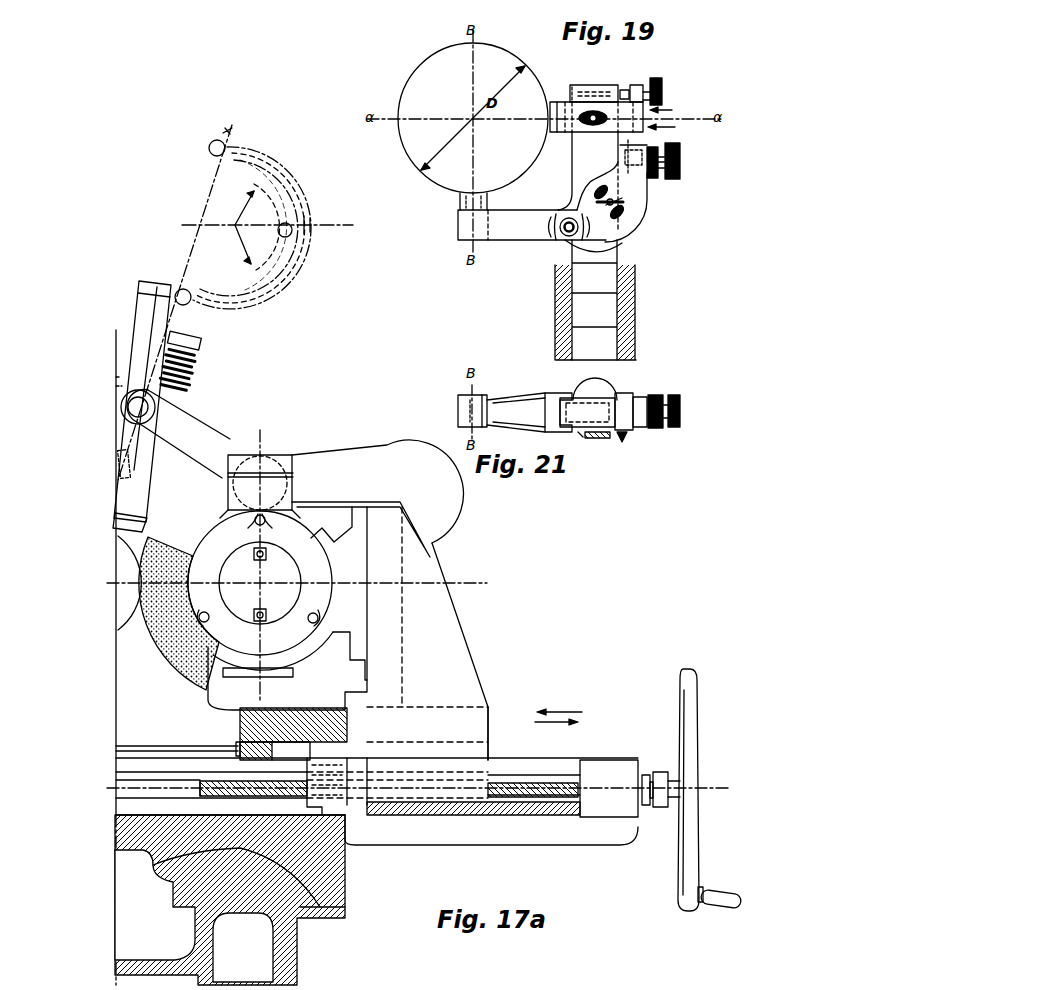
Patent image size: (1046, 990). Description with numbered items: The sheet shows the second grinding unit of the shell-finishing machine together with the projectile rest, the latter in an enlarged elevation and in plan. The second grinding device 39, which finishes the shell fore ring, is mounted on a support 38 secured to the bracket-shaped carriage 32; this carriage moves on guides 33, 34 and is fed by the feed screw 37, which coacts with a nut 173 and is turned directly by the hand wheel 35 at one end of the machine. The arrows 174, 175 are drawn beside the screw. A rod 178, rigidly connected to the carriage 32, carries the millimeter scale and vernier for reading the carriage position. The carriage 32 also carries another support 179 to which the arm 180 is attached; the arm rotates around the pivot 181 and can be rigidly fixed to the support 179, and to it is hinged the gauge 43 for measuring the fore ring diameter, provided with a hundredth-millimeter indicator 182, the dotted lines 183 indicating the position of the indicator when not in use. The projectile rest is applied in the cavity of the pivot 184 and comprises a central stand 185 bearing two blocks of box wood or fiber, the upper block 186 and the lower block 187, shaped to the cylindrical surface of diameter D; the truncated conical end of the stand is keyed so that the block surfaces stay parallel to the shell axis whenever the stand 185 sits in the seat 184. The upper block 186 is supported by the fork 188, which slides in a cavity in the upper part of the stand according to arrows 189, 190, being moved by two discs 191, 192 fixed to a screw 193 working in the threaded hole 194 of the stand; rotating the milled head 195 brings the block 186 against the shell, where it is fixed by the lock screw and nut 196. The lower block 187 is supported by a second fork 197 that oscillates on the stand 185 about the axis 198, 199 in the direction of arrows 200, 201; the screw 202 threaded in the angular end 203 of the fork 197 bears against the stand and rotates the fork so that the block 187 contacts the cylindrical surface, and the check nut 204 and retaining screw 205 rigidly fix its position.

In FIG. 17A, the carriage 32 is at (427, 633).
In FIG. 17A, the guide 33 is at (535, 762).
In FIG. 17A, the guide 34 is at (530, 775).
In FIG. 17A, the hand wheel 35 is at (699, 868).
In FIG. 17A, the feed screw 37 is at (197, 795).
In FIG. 17A, the support 38 is at (253, 608).
In FIG. 17A, the grinding device 39 is at (260, 583).
In FIG. 17A, the gauge 43 is at (263, 225).
In FIG. 17A, the nut 173 is at (327, 770).
In FIG. 17A, the direction of movement 174 is at (559, 703).
In FIG. 17A, the direction of movement 175 is at (568, 731).
In FIG. 17A, the rod 178 is at (140, 748).
In FIG. 17A, the support 179 is at (377, 498).
In FIG. 17A, the arm 180 is at (175, 404).
In FIG. 17A, the pivot 181 is at (260, 491).
In FIG. 17A, the indicator 182 is at (119, 468).
In FIG. 17A, the dotted lines 183 is at (264, 218).
In FIG. 19, the pivot 184 is at (618, 309).
In FIG. 19, the central stand 185 is at (575, 174).
In FIG. 19, the upper block 186 is at (550, 102).
In FIG. 19, the lower block 187 is at (459, 199).
In FIG. 21, the lower block 187 is at (458, 411).
In FIG. 19, the fork 188 is at (553, 133).
In FIG. 21, the fork 188 is at (557, 397).
In FIG. 19, the arrow 189 is at (674, 108).
In FIG. 19, the arrow 190 is at (676, 129).
In FIG. 19, the disc 191 is at (623, 88).
In FIG. 19, the disc 192 is at (641, 84).
In FIG. 19, the screw 193 is at (590, 90).
In FIG. 21, the screw 193 is at (618, 400).
In FIG. 19, the threaded hole 194 is at (580, 84).
In FIG. 19, the milled head 195 is at (663, 92).
In FIG. 21, the milled head 195 is at (654, 395).
In FIG. 19, the lock screw and nut 196 is at (592, 126).
In FIG. 21, the lock screw and nut 196 is at (580, 436).
In FIG. 19, the second fork 197 is at (612, 208).
In FIG. 21, the second fork 197 is at (508, 396).
In FIG. 19, the axis 198 is at (568, 233).
In FIG. 21, the axis 198 is at (572, 396).
In FIG. 19, the axis 199 is at (566, 240).
In FIG. 21, the axis 199 is at (588, 438).
In FIG. 19, the arrow 200 is at (602, 202).
In FIG. 19, the arrow 201 is at (593, 249).
In FIG. 19, the screw 202 is at (666, 170).
In FIG. 21, the screw 202 is at (668, 428).
In FIG. 19, the angular end 203 is at (635, 154).
In FIG. 19, the check nut 204 is at (650, 150).
In FIG. 19, the retaining screw 205 is at (623, 208).
In FIG. 21, the retaining screw 205 is at (621, 441).